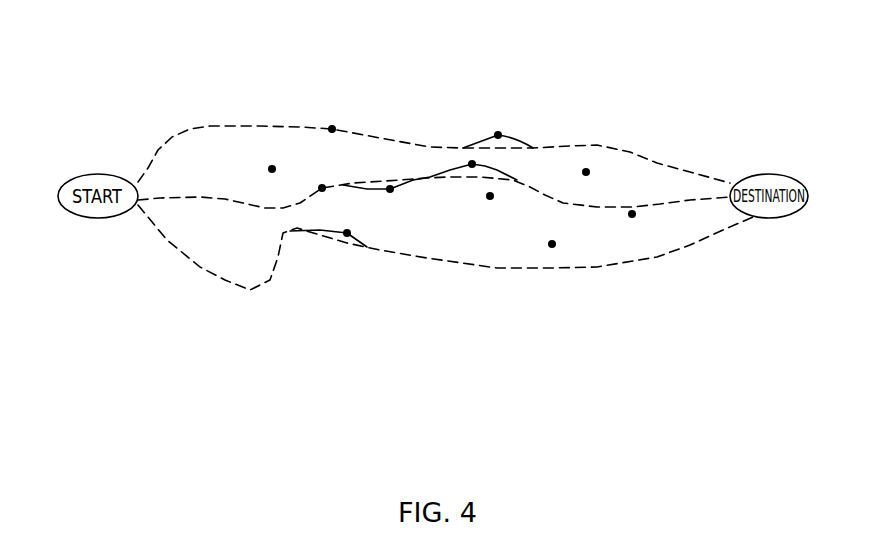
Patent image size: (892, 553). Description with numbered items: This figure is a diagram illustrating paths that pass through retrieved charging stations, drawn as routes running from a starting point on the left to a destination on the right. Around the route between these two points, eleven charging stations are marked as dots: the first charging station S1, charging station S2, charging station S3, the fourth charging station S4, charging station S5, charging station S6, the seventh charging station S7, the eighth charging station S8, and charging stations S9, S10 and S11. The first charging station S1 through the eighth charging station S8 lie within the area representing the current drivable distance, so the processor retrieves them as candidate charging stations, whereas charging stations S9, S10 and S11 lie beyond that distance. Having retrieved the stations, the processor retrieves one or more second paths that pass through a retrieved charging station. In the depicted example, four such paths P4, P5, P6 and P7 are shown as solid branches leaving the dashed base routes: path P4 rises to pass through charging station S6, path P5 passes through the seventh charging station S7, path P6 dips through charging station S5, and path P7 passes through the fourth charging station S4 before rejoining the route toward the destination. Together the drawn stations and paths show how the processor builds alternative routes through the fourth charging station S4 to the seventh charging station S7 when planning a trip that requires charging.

The first charging station S1 is at (260, 168).
The charging station S2 is at (332, 118).
The charging station S3 is at (314, 178).
The fourth charging station S4 is at (354, 222).
The charging station S5 is at (397, 201).
The charging station S6 is at (499, 124).
The seventh charging station S7 is at (459, 163).
The eighth charging station S8 is at (491, 207).
The charging station S9 is at (541, 245).
The charging station S10 is at (603, 180).
The charging station S11 is at (631, 226).
The path P4 is at (517, 139).
The path P5 is at (497, 168).
The path P6 is at (415, 183).
The path P7 is at (358, 247).